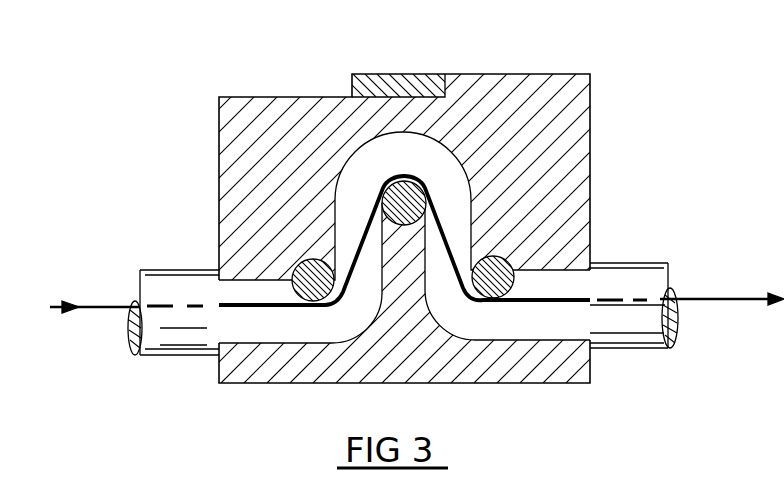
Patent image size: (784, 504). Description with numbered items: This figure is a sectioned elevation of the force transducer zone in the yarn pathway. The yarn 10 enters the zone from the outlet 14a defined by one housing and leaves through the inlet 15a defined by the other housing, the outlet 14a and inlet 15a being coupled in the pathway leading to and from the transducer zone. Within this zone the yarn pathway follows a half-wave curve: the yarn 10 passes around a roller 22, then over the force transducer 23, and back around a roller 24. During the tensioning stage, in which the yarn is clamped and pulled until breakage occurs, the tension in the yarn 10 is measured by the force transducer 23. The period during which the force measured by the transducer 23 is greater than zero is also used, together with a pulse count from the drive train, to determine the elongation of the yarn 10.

The yarn 10 is at (95, 305).
The outlet 14a is at (172, 340).
The inlet 15a is at (625, 332).
The roller 22 is at (307, 288).
The force transducer 23 is at (388, 186).
The roller 24 is at (508, 300).